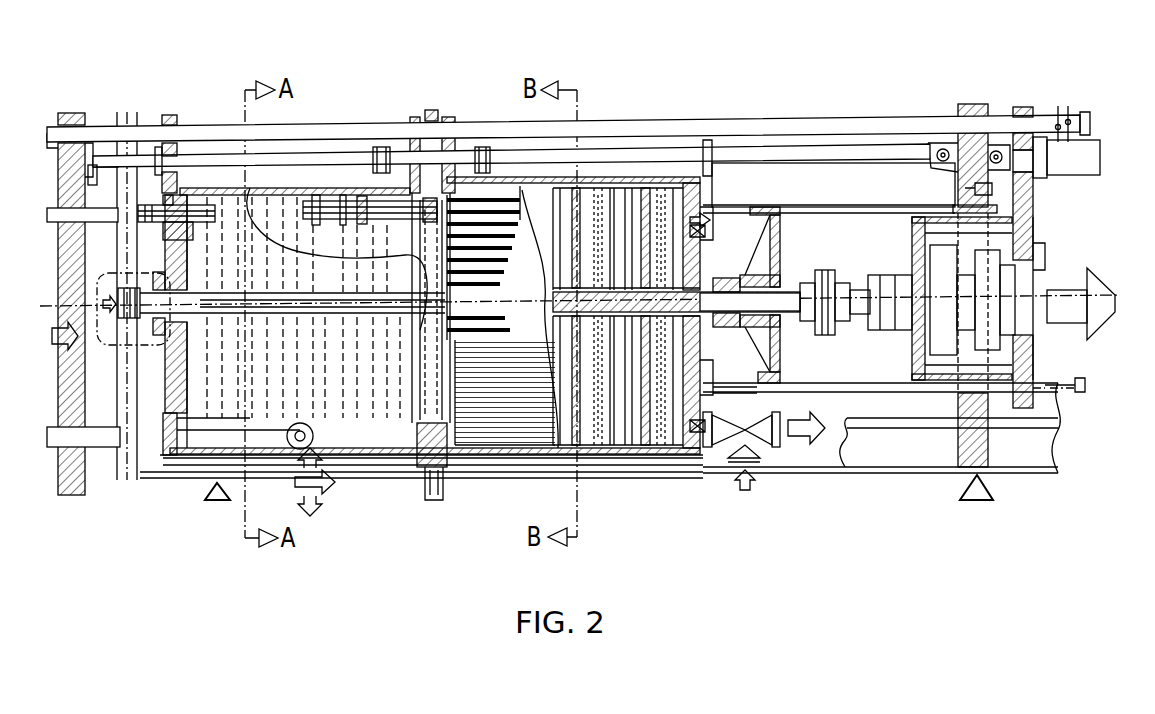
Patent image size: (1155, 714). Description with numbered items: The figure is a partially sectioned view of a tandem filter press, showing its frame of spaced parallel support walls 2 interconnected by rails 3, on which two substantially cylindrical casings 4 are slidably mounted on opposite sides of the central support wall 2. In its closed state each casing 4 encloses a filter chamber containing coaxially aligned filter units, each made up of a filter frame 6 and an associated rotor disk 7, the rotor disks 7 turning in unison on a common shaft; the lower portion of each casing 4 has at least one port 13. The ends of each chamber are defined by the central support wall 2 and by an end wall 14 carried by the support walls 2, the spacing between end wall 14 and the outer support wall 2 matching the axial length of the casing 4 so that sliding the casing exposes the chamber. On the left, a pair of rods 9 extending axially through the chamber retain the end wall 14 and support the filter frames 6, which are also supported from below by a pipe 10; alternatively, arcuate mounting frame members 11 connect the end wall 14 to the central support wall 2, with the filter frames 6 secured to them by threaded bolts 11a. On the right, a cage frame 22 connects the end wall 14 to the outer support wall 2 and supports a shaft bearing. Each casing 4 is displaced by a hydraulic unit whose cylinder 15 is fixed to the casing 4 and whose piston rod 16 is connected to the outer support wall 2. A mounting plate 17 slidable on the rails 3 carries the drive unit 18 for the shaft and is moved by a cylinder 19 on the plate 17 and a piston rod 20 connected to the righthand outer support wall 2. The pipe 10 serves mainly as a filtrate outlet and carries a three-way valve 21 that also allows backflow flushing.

The support wall 2 is at (78, 113).
The rails 3 is at (840, 125).
The casing 4 is at (178, 385).
The filter frame 6 is at (557, 186).
The rotor disk 7 is at (612, 437).
The rods 9 is at (335, 188).
The pipe 10 is at (597, 435).
The mounting frame members 11 is at (470, 186).
The threaded bolts 11a is at (500, 290).
The port 13 is at (330, 447).
The end wall 14 is at (675, 183).
The cylinder 15 is at (628, 155).
The piston rod 16 is at (780, 153).
The mounting plate 17 is at (1033, 207).
The drive unit 18 is at (1060, 297).
The cylinder 19 is at (1088, 157).
The piston rod 20 is at (1022, 157).
The three-way valve 21 is at (760, 470).
The cage frame 22 is at (100, 347).